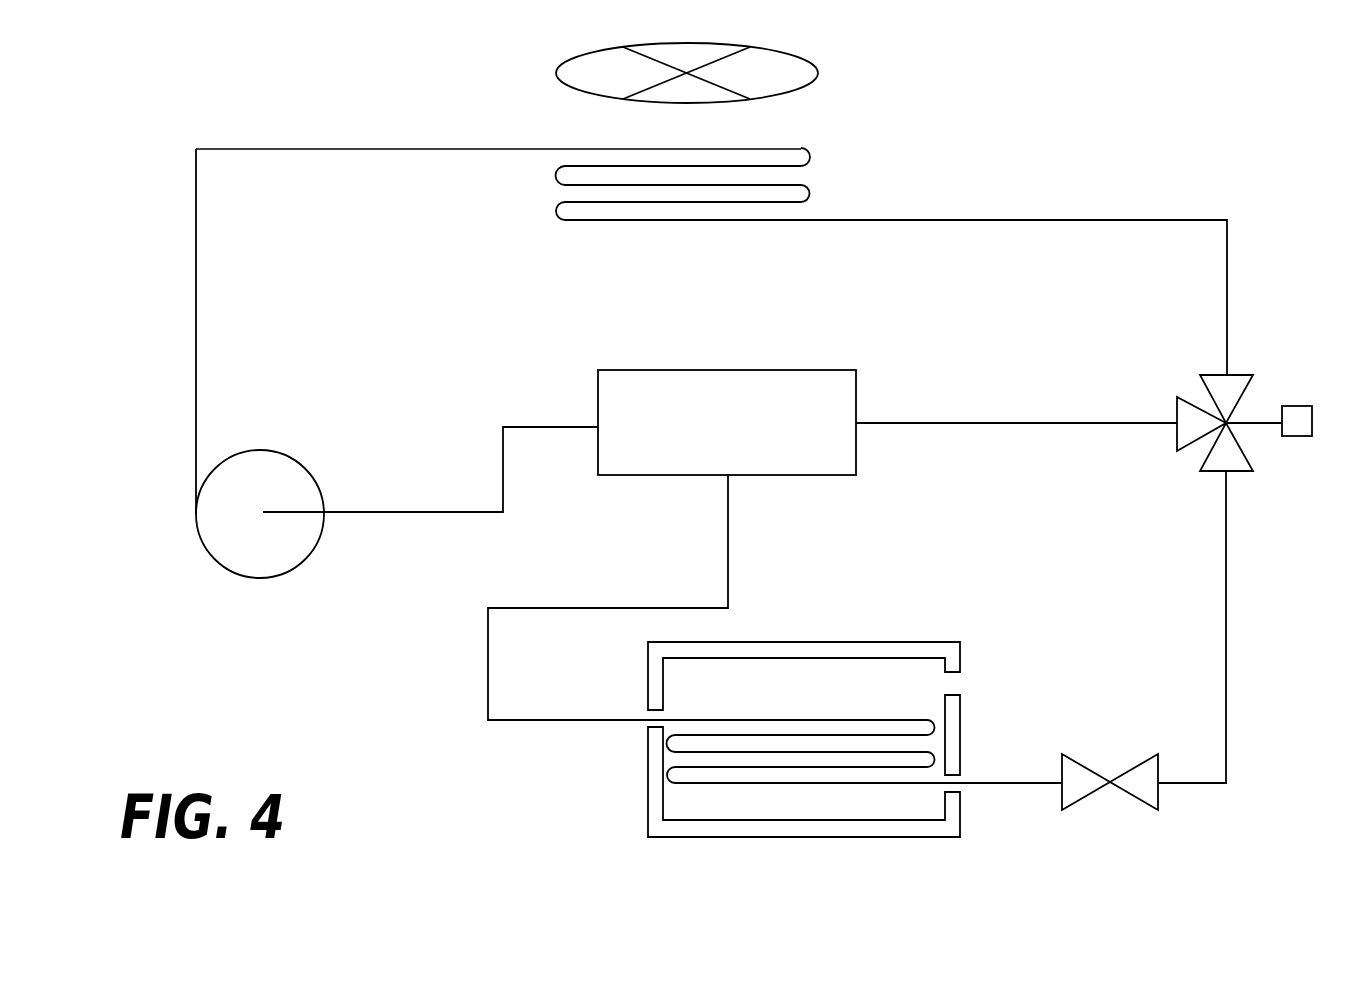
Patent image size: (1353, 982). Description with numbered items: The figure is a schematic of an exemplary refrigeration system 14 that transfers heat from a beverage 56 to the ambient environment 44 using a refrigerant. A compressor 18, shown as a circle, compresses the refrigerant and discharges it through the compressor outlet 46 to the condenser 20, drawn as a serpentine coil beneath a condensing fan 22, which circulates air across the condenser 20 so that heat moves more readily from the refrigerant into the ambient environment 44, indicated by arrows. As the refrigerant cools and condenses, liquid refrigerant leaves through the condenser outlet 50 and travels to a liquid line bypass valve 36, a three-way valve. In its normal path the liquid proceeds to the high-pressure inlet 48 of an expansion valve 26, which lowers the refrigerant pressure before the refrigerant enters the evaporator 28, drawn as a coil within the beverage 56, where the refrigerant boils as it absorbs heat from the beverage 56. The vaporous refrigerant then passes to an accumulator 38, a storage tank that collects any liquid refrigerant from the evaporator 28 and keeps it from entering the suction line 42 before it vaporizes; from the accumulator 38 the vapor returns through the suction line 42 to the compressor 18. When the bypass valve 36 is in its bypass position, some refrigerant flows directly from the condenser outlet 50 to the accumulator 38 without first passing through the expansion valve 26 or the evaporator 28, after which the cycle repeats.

The refrigeration system 14 is at (156, 130).
The compressor 18 is at (270, 450).
The condenser 20 is at (808, 148).
The condensing fan 22 is at (818, 73).
The expansion valve 26 is at (1140, 798).
The evaporator 28 is at (918, 720).
The liquid line bypass valve 36 is at (1237, 372).
The accumulator 38 is at (728, 370).
The suction line 42 is at (390, 512).
The ambient environment 44 is at (805, 216).
The compressor outlet 46 is at (196, 275).
The high-pressure inlet 48 is at (1180, 785).
The condenser outlet 50 is at (1042, 221).
The beverage 56 is at (820, 697).